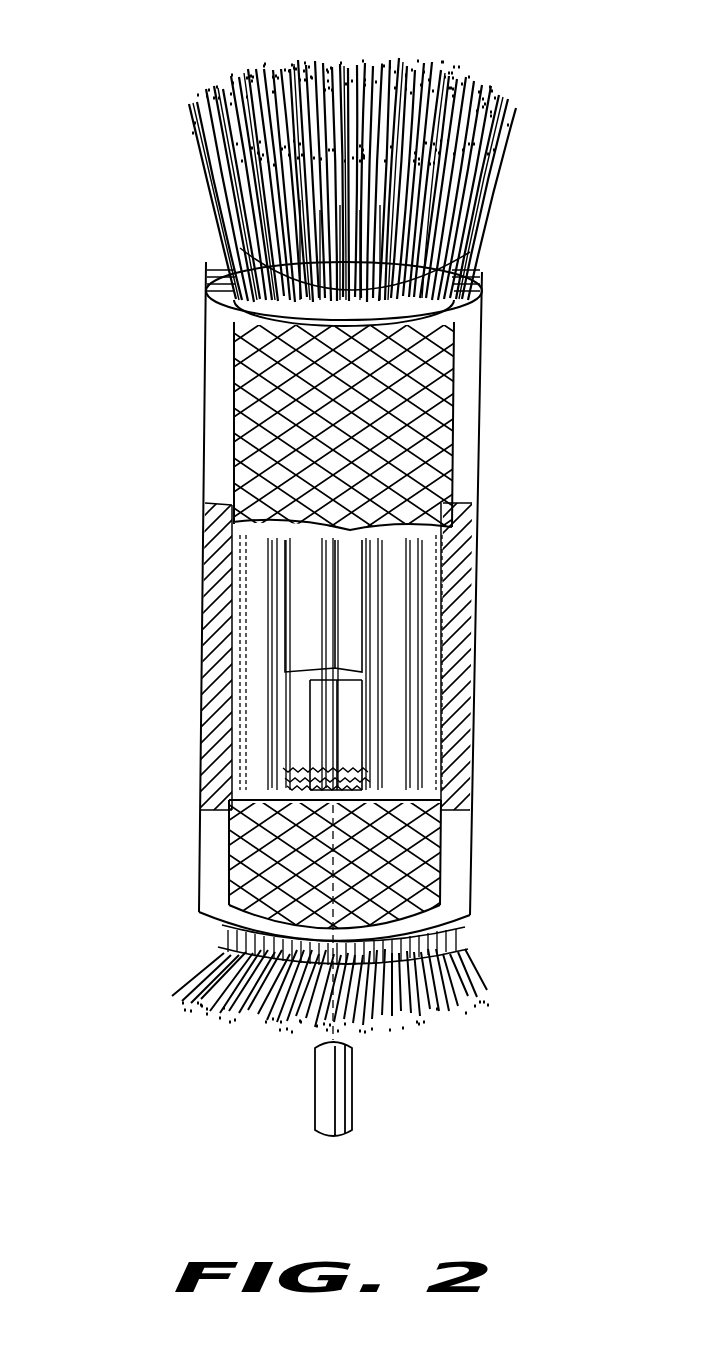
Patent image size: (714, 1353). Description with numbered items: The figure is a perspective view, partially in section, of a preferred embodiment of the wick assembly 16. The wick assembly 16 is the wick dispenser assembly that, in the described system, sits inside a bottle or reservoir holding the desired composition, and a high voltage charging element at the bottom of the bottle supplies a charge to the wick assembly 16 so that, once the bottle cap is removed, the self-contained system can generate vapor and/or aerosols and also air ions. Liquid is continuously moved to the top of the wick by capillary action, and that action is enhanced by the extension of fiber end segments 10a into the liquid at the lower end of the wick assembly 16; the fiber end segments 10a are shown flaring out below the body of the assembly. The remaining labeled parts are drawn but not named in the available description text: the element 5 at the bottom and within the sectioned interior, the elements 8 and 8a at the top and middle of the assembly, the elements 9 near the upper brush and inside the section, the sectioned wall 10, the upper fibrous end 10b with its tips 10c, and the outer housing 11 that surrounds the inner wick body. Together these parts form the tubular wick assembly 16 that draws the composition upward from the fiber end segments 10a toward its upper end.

The pin / central core rod 5 is at (340, 748).
The binding collar / compressed bristle base 8 is at (240, 250).
The bristle strands 8a is at (240, 338).
The bristle filaments 9 is at (457, 245).
The tubular wall 10 is at (203, 578).
The fiber end segments 10a is at (197, 965).
The upper brush 10b is at (480, 177).
The bristle tips 10c is at (267, 57).
The outer tube housing 11 is at (483, 383).
The wick assembly 16 is at (190, 445).